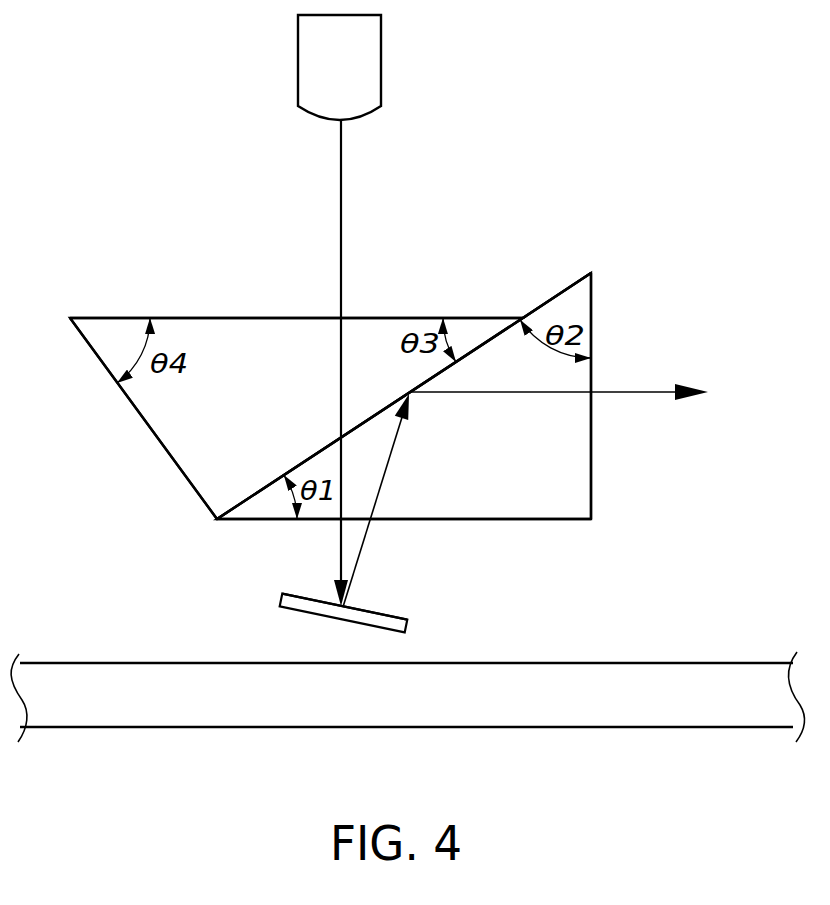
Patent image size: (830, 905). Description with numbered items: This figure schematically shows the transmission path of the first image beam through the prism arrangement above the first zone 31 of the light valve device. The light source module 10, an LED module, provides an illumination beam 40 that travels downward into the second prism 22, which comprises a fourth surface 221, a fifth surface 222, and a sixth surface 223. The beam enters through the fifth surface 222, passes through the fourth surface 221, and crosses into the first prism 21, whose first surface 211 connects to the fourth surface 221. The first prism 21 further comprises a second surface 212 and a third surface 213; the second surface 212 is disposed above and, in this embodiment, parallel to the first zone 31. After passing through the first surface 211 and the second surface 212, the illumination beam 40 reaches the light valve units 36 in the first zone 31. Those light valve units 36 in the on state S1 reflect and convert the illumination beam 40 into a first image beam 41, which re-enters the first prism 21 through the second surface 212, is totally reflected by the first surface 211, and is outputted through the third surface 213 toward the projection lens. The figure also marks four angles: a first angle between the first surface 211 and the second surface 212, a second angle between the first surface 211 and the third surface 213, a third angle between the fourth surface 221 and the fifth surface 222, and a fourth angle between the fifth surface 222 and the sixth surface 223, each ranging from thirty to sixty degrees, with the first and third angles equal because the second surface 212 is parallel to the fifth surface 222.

The light source module 10 is at (350, 75).
The illumination beam 40 is at (341, 178).
The second prism 22 is at (268, 401).
The fifth surface 222 is at (222, 318).
The sixth surface 223 is at (156, 436).
The fourth surface 221 is at (396, 398).
The first prism 21 is at (512, 473).
The first surface 211 is at (540, 306).
The second surface 212 is at (504, 520).
The third surface 213 is at (592, 455).
The first image beam 41 is at (363, 548).
The light valve units 36 is at (282, 602).
The on state S1 is at (400, 625).
The first zone 31 is at (595, 710).